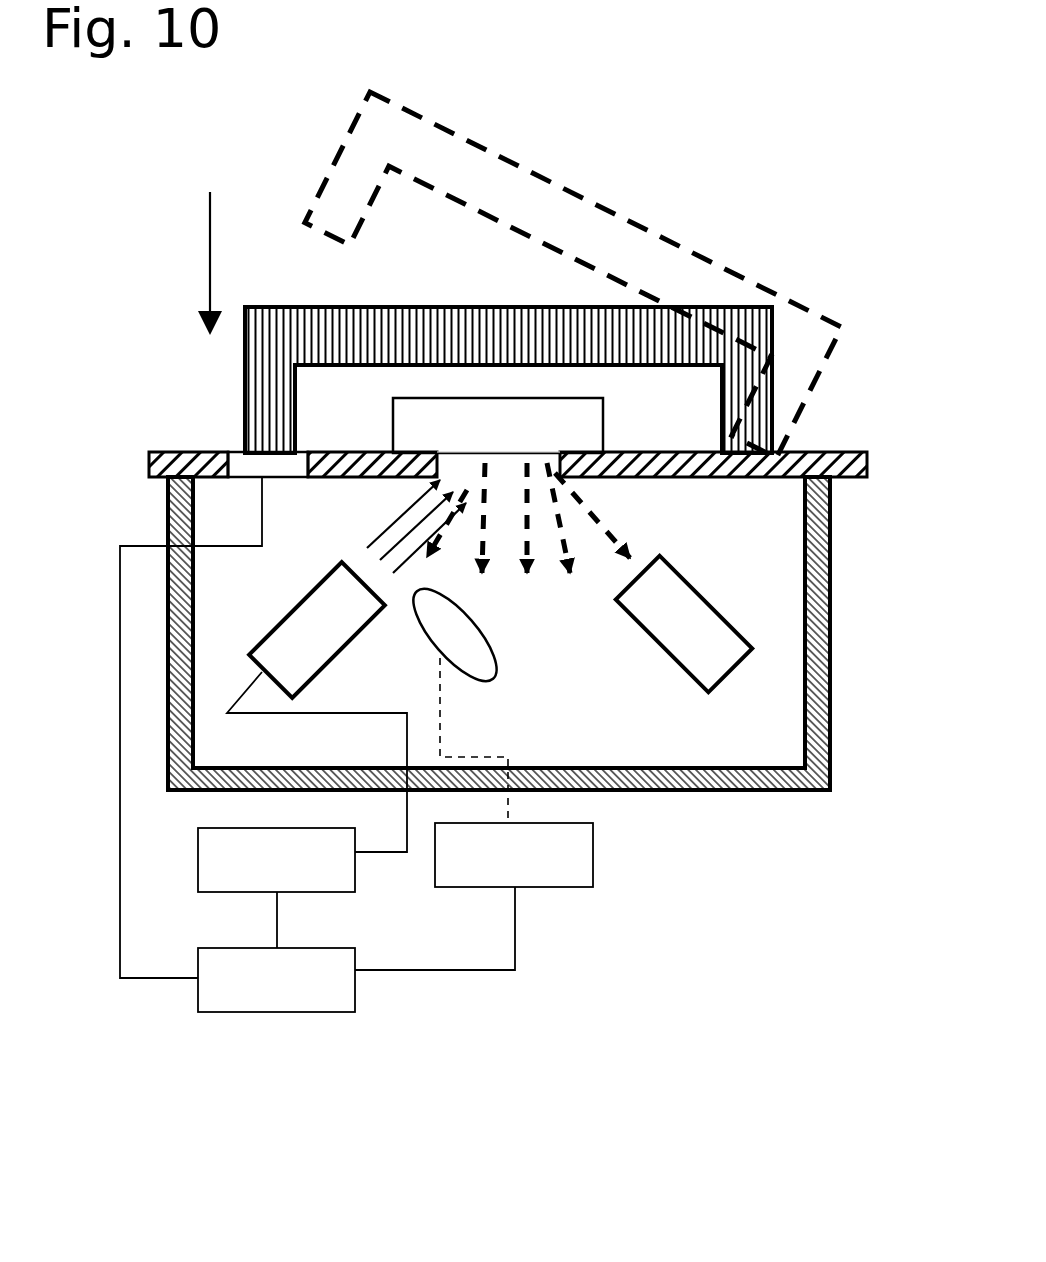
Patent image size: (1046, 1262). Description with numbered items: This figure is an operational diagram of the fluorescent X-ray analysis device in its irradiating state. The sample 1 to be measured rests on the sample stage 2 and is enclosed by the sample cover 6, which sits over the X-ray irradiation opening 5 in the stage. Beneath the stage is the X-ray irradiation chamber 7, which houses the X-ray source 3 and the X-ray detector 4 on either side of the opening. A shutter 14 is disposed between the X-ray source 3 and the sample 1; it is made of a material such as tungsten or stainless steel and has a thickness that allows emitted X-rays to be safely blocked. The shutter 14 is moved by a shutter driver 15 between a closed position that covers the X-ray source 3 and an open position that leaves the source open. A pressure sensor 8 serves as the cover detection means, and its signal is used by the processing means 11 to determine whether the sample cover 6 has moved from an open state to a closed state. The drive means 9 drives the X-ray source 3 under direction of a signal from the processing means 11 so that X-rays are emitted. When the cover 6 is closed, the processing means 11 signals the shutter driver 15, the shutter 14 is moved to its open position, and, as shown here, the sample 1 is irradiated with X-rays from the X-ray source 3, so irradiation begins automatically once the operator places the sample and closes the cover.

The sample 1 is at (580, 413).
The sample stage 2 is at (658, 452).
The X-ray source 3 is at (317, 633).
The X-ray detector 4 is at (695, 632).
The X-ray irradiation opening 5 is at (460, 465).
The sample cover 6 is at (393, 337).
The X-ray irradiation chamber 7 is at (697, 735).
The pressure sensor 8 is at (250, 467).
The drive means 9 is at (263, 878).
The processing means 11 is at (263, 982).
The shutter 14 is at (462, 656).
The shutter driver 15 is at (540, 862).